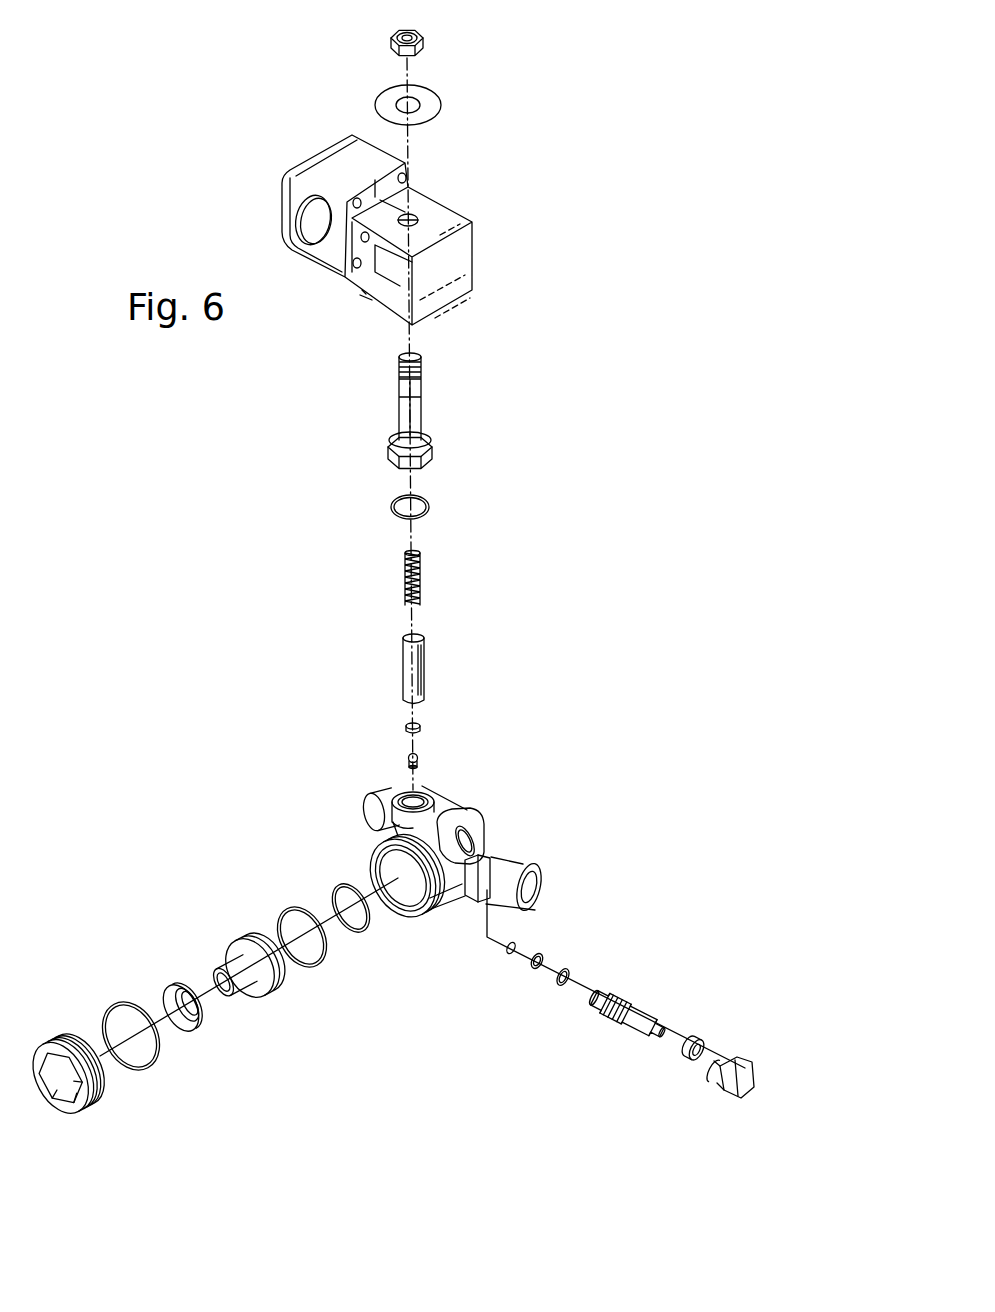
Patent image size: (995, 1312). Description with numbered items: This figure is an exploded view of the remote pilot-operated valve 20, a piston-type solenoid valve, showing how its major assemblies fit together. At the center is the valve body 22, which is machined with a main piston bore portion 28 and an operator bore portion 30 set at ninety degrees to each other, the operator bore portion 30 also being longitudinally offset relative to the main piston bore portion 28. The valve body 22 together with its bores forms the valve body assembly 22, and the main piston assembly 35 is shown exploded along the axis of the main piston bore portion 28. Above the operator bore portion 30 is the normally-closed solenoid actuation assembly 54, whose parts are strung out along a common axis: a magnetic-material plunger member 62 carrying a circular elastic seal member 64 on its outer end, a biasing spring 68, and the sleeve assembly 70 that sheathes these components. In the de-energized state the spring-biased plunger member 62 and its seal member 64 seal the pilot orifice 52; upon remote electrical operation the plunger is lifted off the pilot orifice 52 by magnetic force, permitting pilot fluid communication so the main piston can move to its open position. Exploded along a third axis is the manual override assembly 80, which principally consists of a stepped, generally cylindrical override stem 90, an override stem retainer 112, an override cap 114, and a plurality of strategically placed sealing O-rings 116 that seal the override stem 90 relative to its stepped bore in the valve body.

The remote pilot-operated valve 20 is at (634, 459).
The valve body 22 is at (531, 783).
The main piston bore portion 28 is at (402, 867).
The operator bore portion 30 is at (405, 792).
The main piston assembly 35 is at (100, 1122).
The pilot orifice 52 is at (420, 762).
The solenoid actuation assembly 54 is at (323, 358).
The plunger member 62 is at (403, 678).
The elastic seal member 64 is at (422, 728).
The biasing spring 68 is at (405, 565).
The sleeve assembly 70 is at (398, 417).
The manual override assembly 80 is at (677, 1123).
The override stem 90 is at (617, 993).
The override stem retainer 112 is at (703, 1037).
The override cap 114 is at (737, 1097).
The sealing O-rings 116 is at (540, 955).